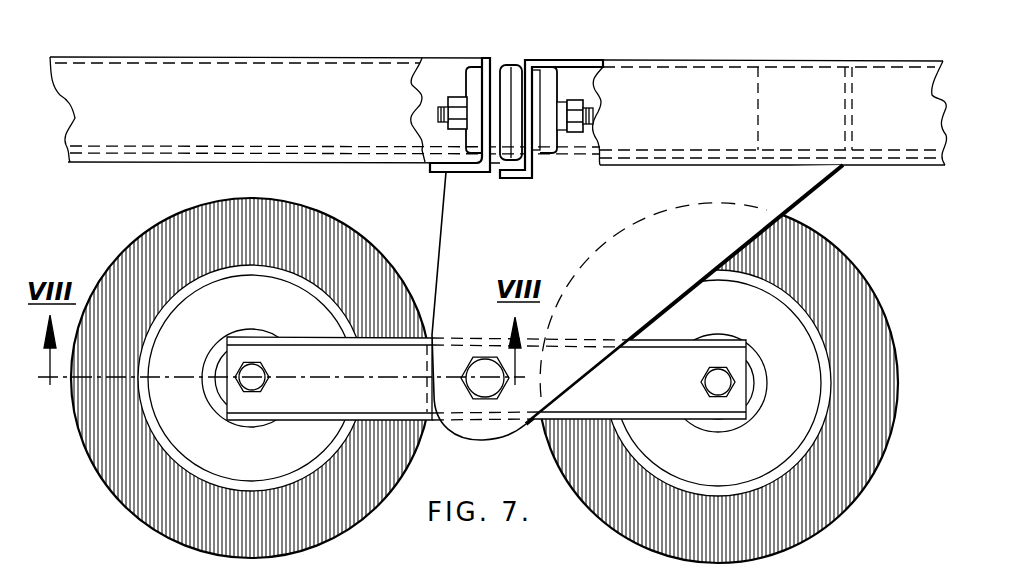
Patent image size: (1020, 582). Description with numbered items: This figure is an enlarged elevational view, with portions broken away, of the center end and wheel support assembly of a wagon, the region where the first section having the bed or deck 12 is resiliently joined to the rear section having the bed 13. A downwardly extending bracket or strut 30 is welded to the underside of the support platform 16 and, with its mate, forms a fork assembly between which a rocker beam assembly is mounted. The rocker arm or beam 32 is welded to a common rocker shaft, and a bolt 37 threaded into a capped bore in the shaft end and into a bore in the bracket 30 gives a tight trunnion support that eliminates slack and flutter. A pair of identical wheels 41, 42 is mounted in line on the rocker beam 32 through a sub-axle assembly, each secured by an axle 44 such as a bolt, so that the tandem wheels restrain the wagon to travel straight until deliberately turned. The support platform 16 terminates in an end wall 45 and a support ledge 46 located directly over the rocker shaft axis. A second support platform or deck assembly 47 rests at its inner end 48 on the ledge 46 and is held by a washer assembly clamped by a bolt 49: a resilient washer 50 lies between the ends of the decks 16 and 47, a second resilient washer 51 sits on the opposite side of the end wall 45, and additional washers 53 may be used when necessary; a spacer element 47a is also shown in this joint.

The bed or deck 12 is at (852, 53).
The bed 13 is at (392, 54).
The support platform 16 is at (711, 60).
The bracket or strut 30 is at (442, 222).
The rocker arm or beam 32 is at (567, 417).
The bolt 37 is at (484, 362).
The wheel 41 is at (147, 234).
The wheel 42 is at (820, 249).
The axle 44 is at (243, 375).
The end wall 45 is at (528, 97).
The support ledge 46 is at (500, 174).
The second support platform or deck assembly 47 is at (247, 68).
The spacer 47a is at (498, 64).
The inner end 48 is at (440, 179).
The bolt 49 is at (574, 116).
The resilient washer 50 is at (503, 128).
The resilient washer 51 is at (543, 141).
The additional washer 53 is at (468, 84).